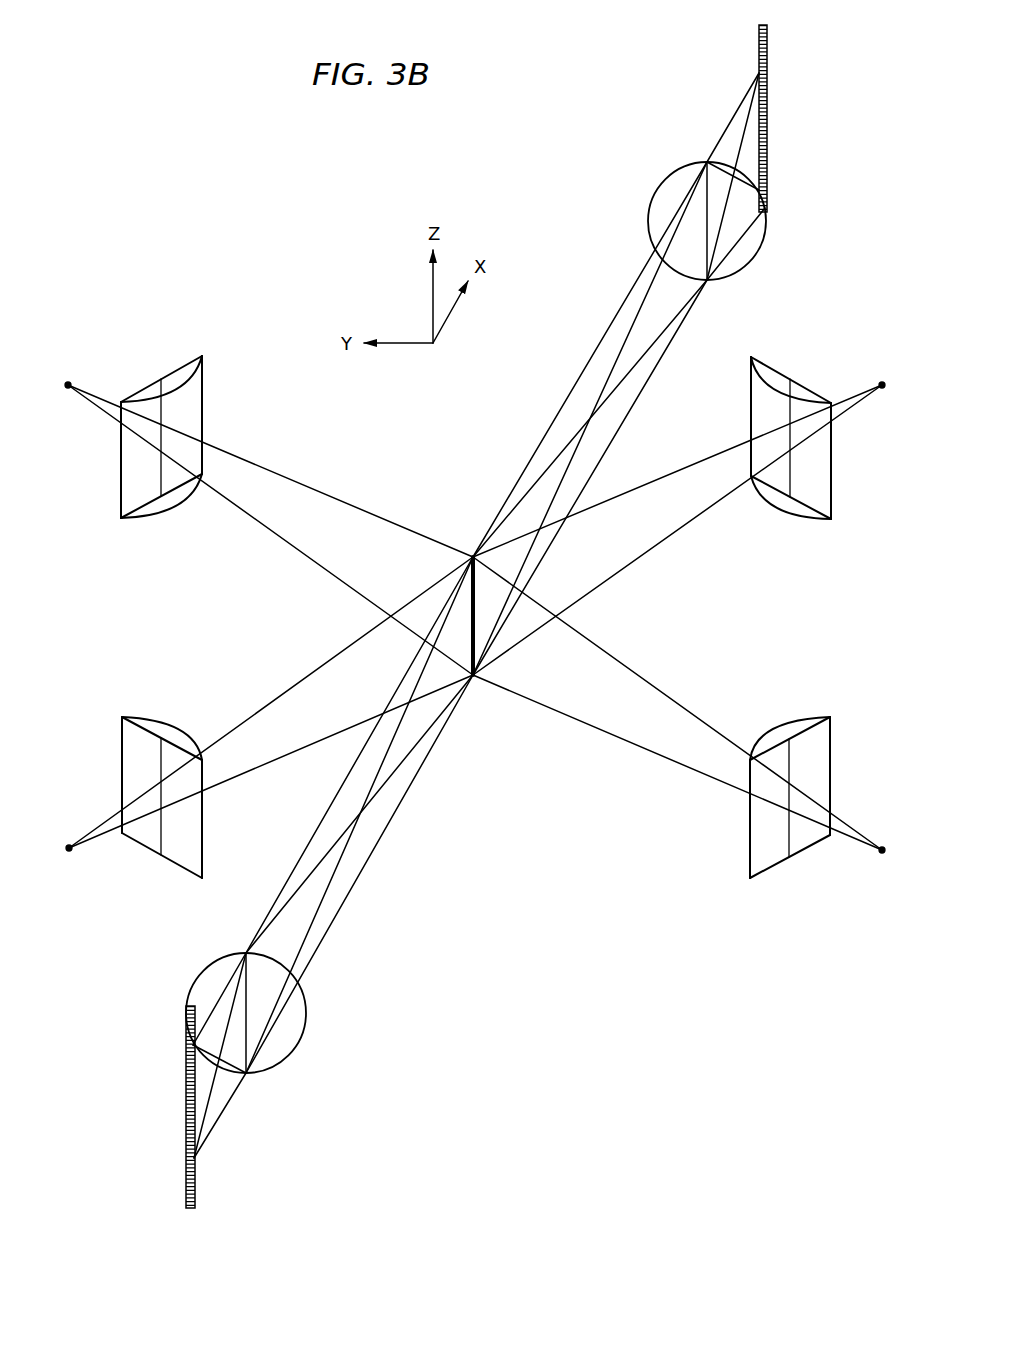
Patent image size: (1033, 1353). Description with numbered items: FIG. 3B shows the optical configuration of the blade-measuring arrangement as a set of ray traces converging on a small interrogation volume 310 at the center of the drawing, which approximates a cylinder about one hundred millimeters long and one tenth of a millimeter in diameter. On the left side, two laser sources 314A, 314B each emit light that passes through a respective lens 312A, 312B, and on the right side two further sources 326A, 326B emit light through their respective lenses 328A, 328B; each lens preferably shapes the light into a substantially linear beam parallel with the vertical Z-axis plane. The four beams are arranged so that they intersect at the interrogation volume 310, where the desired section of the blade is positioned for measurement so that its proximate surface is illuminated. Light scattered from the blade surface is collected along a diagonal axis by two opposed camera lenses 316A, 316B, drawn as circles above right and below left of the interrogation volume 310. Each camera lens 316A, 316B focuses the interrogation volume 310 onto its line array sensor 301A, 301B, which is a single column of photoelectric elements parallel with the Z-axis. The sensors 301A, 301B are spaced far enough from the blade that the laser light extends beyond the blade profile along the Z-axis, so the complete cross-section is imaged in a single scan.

The line array sensor 301A is at (750, 39).
The line array sensor 301B is at (173, 1098).
The interrogation volume 310 is at (476, 652).
The lens 312A is at (217, 373).
The lens 312B is at (141, 703).
The source 314A is at (69, 372).
The source 314B is at (69, 833).
The camera lens 316A is at (768, 247).
The camera lens 316B is at (323, 1038).
The source 326A is at (884, 370).
The source 326B is at (882, 842).
The lens 328A is at (840, 506).
The lens 328B is at (837, 727).